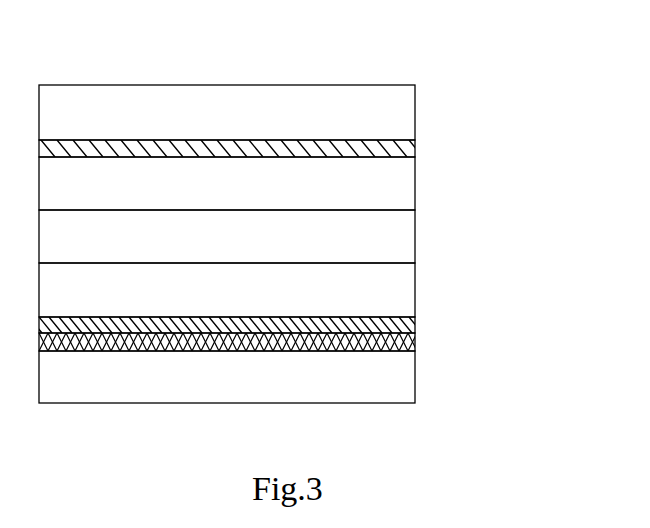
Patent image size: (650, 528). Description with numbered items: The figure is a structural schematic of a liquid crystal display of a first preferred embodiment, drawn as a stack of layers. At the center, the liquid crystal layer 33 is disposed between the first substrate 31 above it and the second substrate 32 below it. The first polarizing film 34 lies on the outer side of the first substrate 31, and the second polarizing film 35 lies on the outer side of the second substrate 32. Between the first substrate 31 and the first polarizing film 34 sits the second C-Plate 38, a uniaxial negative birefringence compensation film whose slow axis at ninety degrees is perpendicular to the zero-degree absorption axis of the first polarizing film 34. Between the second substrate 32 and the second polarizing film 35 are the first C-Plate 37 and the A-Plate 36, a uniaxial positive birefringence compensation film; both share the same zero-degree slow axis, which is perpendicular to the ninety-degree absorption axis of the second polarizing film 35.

The first polarizing film 34 is at (415, 113).
The second C-Plate 38 is at (415, 143).
The first substrate 31 is at (415, 179).
The liquid crystal layer 33 is at (415, 237).
The second substrate 32 is at (415, 291).
The first C-Plate 37 is at (415, 321).
The A-Plate 36 is at (415, 338).
The second polarizing film 35 is at (415, 377).